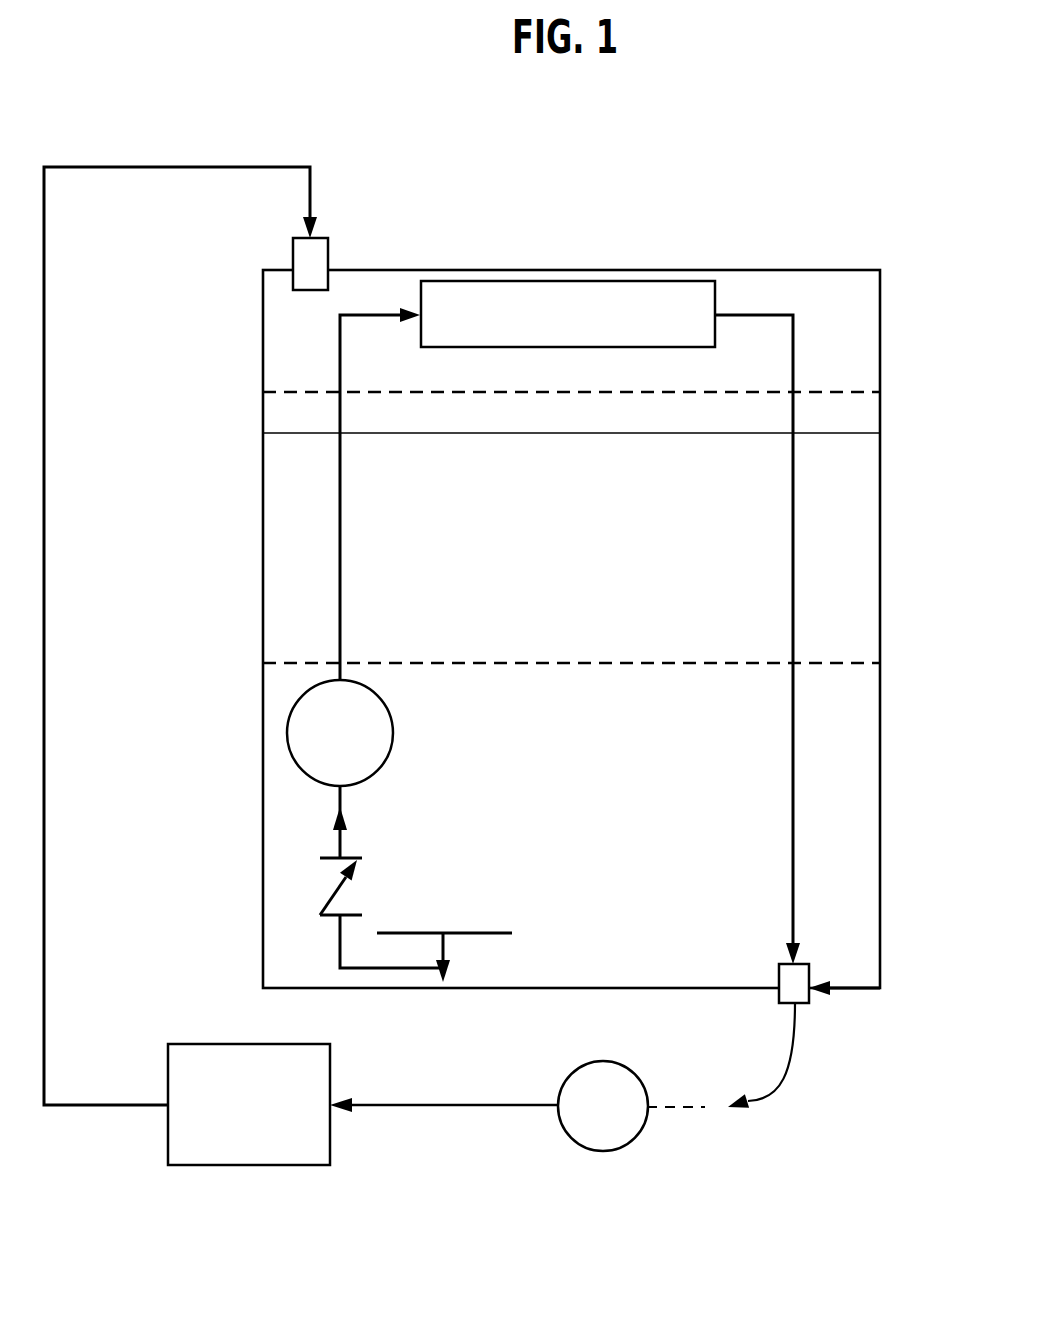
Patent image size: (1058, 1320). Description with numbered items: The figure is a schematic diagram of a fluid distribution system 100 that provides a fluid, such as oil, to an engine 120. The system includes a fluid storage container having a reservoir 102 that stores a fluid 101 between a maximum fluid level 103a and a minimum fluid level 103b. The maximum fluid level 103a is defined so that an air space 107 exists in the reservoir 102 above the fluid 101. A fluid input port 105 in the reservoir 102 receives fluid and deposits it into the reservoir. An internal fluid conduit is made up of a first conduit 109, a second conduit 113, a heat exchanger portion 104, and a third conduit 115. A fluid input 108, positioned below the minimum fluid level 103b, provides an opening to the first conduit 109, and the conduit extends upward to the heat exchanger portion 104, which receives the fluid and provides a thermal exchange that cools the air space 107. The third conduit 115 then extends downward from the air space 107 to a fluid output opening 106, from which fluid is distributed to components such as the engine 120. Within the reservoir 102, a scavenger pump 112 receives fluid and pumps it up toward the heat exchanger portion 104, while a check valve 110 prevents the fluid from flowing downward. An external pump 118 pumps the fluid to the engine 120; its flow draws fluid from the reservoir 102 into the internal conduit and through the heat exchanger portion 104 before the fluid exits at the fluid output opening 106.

The fluid distribution system 100 is at (660, 160).
The fluid 101 is at (394, 433).
The reservoir 102 is at (880, 373).
The maximum fluid level 103a is at (600, 392).
The minimum fluid level 103b is at (665, 663).
The heat exchanger portion 104 is at (688, 347).
The fluid input port 105 is at (329, 244).
The fluid output opening 106 is at (809, 1003).
The air space 107 is at (373, 360).
The fluid input 108 is at (490, 933).
The first conduit 109 is at (340, 947).
The check valve 110 is at (387, 863).
The scavenger pump 112 is at (394, 733).
The second conduit 113 is at (340, 570).
The third conduit 115 is at (793, 522).
The external pump 118 is at (608, 1075).
The engine 120 is at (247, 1165).